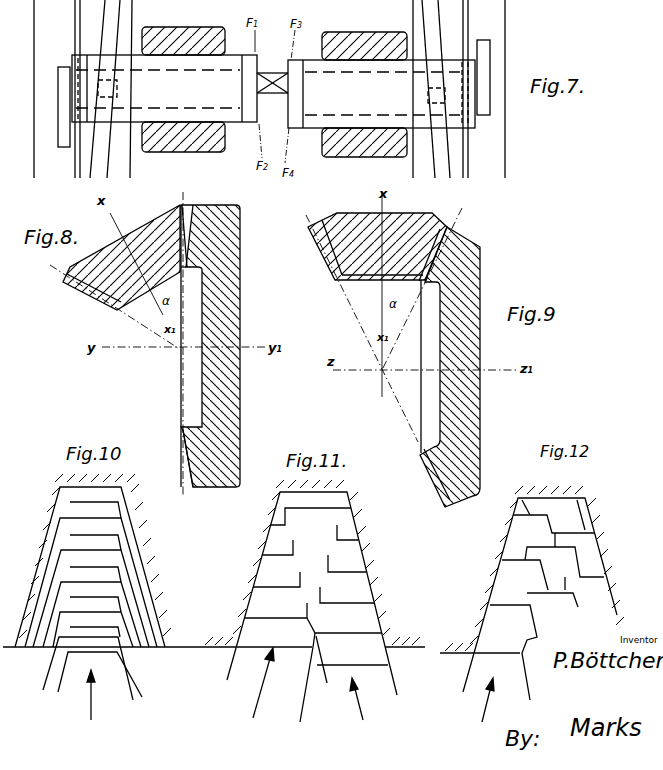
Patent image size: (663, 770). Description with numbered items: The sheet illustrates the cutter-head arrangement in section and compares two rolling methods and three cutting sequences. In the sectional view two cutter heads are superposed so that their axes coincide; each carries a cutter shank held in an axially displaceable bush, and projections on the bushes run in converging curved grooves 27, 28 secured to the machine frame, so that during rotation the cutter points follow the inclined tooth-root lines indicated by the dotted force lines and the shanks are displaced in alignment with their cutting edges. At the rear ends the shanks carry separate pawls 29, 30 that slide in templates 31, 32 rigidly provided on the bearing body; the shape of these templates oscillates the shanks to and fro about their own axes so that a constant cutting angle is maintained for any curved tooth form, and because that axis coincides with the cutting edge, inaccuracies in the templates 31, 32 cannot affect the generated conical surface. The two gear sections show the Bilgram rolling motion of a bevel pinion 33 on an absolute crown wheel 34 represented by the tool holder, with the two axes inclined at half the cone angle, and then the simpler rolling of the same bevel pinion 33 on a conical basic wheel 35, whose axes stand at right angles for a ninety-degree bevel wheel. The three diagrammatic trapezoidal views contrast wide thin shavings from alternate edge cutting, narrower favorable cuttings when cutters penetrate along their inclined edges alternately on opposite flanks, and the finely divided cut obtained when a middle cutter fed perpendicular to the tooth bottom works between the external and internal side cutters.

In FIG. 7, the groove 27 is at (111, 89).
In FIG. 7, the groove 28 is at (431, 89).
In FIG. 7, the pawl 29 is at (64, 107).
In FIG. 7, the pawl 30 is at (485, 77).
In FIG. 7, the template 31 is at (57, 89).
In FIG. 7, the template 32 is at (484, 89).
In FIG. 8, the bevel pinion 33 is at (121, 257).
In FIG. 9, the bevel pinion 33 is at (377, 247).
In FIG. 8, the absolute crown wheel 34 is at (210, 346).
In FIG. 9, the conical basic wheel 35 is at (450, 367).